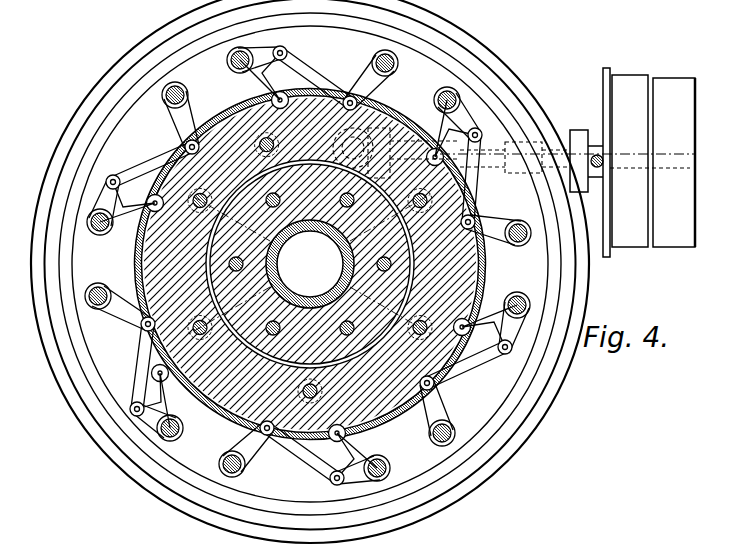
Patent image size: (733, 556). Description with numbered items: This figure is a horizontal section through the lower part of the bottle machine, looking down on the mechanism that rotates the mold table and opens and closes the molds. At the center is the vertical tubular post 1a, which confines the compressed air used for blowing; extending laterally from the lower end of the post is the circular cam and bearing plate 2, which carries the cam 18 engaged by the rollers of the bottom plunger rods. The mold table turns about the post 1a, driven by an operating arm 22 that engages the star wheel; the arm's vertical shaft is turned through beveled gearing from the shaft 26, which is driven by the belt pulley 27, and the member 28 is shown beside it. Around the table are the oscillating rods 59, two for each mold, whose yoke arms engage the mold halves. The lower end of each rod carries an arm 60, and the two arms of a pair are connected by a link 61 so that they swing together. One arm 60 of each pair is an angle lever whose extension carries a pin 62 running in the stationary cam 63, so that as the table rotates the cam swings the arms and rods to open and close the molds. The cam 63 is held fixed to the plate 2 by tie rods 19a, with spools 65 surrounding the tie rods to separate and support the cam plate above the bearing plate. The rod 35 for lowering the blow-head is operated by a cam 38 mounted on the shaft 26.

The vertical tubular post 1a is at (284, 279).
The circular cam and bearing plate 2 is at (463, 386).
The cam 18 is at (523, 434).
The tie rods 19a is at (160, 164).
The operating arm 22 is at (354, 98).
The shaft 26 is at (566, 140).
The belt pulley 27 is at (626, 80).
The block 28 is at (672, 80).
The rod 35 is at (600, 178).
The cam 38 is at (588, 130).
The oscillating rods 59 is at (108, 281).
The arms 60 is at (122, 309).
The link 61 is at (145, 333).
The pin 62 is at (461, 346).
The cam 63 is at (445, 278).
The spools 65 is at (235, 123).